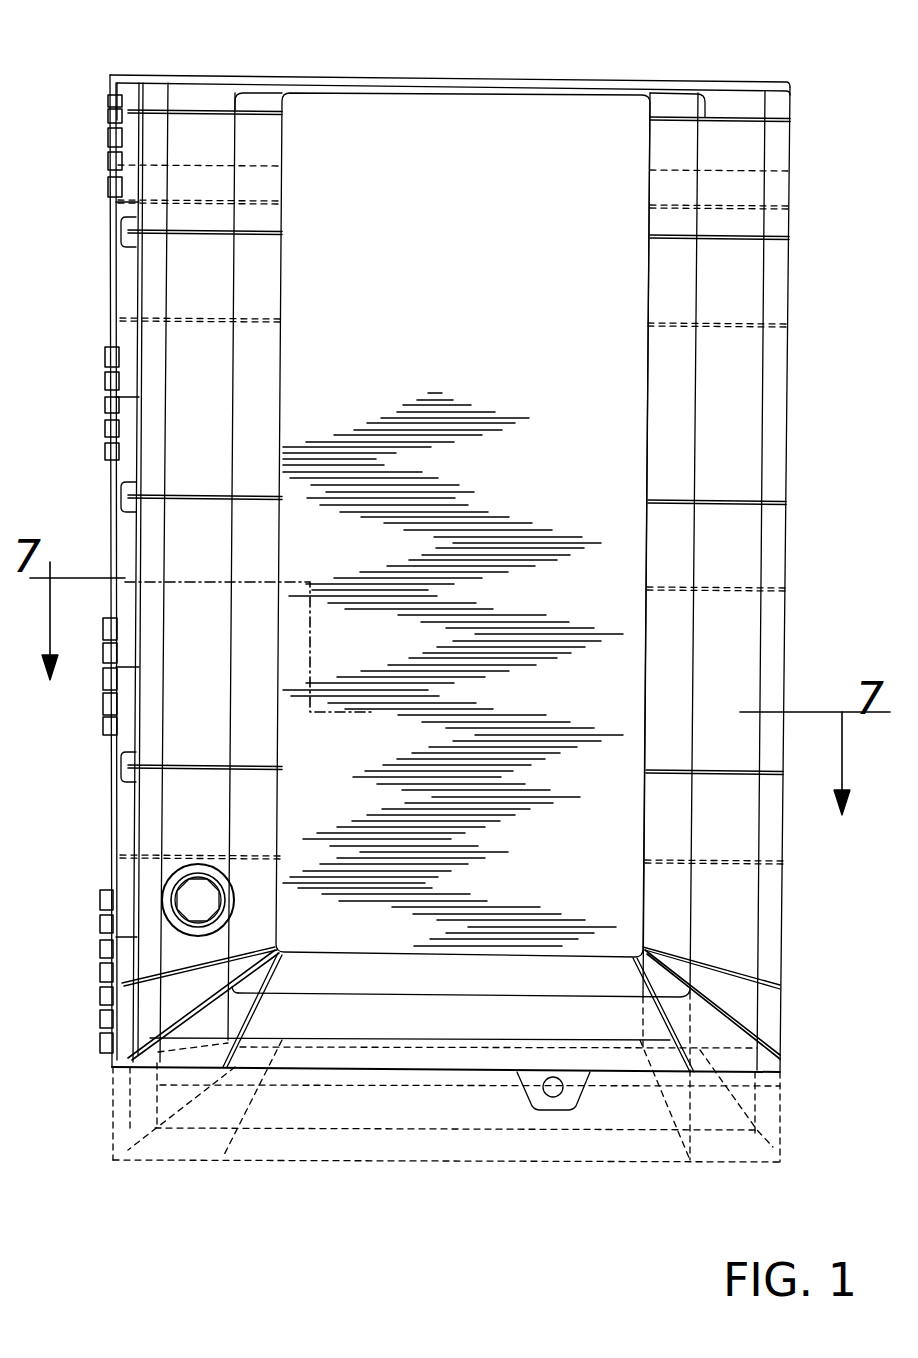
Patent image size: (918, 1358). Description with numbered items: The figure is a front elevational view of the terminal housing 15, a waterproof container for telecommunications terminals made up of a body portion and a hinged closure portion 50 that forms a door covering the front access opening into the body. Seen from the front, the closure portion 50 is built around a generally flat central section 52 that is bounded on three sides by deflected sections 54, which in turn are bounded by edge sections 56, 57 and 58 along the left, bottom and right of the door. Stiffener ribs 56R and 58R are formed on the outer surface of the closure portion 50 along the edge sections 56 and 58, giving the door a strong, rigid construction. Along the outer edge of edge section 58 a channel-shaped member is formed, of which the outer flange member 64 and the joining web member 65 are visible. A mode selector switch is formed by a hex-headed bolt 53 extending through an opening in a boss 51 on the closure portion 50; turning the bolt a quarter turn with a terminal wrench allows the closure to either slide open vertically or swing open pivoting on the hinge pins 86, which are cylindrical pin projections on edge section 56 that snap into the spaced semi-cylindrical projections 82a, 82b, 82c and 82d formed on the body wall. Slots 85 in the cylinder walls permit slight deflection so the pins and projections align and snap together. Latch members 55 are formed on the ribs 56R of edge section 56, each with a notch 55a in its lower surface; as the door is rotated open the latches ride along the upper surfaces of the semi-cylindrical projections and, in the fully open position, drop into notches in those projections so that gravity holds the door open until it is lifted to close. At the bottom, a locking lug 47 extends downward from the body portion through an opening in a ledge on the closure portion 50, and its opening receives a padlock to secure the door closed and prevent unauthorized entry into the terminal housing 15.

The terminal housing 15 is at (436, 68).
The locking lug 47 is at (536, 1082).
The closure portion 50 is at (712, 648).
The boss 51 is at (212, 868).
The central section 52 is at (516, 118).
The hex-headed bolt 53 is at (212, 898).
The deflected sections 54 is at (666, 268).
The latch members 55 is at (125, 215).
The notch 55a is at (131, 520).
The edge section 56 is at (196, 393).
The stiffener ribs 56R is at (206, 106).
The edge section 57 is at (314, 1022).
The edge section 58 is at (716, 362).
The stiffener ribs 58R is at (771, 118).
The flange member 64 is at (777, 377).
The web member 65 is at (789, 455).
The semi-cylindrical projection 82a is at (108, 131).
The semi-cylindrical projection 82b is at (107, 351).
The semi-cylindrical projection 82c is at (104, 671).
The semi-cylindrical projection 82d is at (105, 946).
The slots 85 is at (108, 406).
The cylindrical pin projections 86 is at (110, 866).